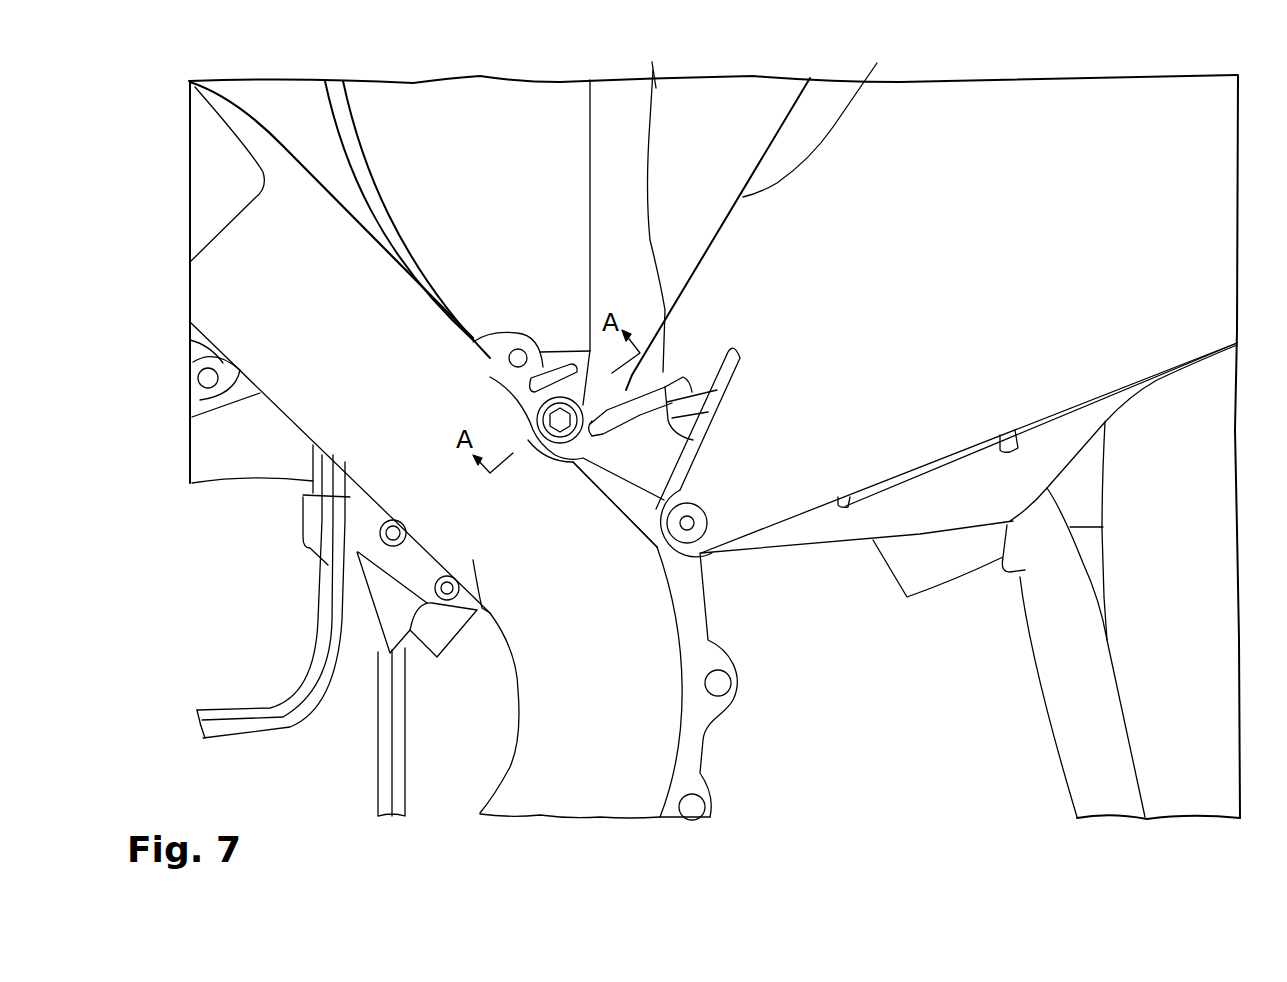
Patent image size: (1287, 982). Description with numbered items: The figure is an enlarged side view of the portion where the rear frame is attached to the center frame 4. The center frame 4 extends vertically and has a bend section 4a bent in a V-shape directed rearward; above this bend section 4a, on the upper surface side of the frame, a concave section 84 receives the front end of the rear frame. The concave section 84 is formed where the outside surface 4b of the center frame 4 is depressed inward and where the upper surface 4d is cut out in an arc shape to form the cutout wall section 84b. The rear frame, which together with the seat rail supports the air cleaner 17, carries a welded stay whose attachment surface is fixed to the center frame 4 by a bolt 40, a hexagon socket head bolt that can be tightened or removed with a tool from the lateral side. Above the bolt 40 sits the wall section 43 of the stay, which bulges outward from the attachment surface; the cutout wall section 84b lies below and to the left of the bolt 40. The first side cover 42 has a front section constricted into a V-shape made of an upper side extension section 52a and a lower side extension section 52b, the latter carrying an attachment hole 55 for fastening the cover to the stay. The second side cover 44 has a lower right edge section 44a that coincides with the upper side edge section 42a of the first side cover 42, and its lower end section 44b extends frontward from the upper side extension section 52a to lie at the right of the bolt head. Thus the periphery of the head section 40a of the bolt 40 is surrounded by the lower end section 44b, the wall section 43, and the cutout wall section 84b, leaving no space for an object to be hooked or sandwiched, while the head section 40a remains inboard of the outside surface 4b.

The center frame 4 is at (660, 717).
The bend section 4a is at (630, 643).
The outside surface 4b is at (655, 583).
The upper surface 4d is at (360, 227).
The air cleaner 17 is at (328, 240).
The second side cover 44 is at (610, 165).
The lower right edge section 44a is at (826, 115).
The lower end section 44b is at (583, 380).
The upper side extension section 52a is at (643, 60).
The lower side extension section 52b is at (713, 531).
The first side cover 42 is at (857, 468).
The upper side edge section 42a is at (770, 150).
The wall section 43 is at (510, 383).
The concave section 84 is at (513, 423).
The cutout wall section 84b is at (543, 433).
The bolt 40 is at (582, 450).
The head section 40a is at (560, 450).
The attachment hole 55 is at (692, 522).